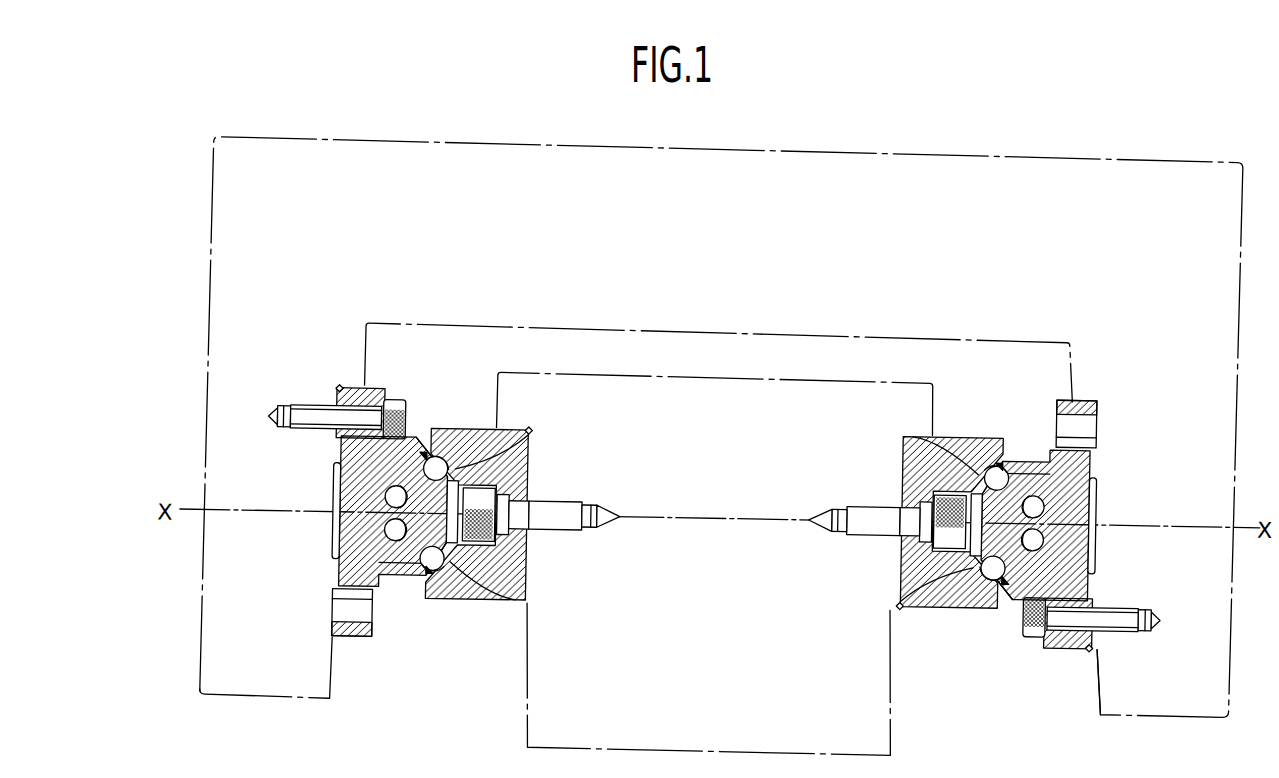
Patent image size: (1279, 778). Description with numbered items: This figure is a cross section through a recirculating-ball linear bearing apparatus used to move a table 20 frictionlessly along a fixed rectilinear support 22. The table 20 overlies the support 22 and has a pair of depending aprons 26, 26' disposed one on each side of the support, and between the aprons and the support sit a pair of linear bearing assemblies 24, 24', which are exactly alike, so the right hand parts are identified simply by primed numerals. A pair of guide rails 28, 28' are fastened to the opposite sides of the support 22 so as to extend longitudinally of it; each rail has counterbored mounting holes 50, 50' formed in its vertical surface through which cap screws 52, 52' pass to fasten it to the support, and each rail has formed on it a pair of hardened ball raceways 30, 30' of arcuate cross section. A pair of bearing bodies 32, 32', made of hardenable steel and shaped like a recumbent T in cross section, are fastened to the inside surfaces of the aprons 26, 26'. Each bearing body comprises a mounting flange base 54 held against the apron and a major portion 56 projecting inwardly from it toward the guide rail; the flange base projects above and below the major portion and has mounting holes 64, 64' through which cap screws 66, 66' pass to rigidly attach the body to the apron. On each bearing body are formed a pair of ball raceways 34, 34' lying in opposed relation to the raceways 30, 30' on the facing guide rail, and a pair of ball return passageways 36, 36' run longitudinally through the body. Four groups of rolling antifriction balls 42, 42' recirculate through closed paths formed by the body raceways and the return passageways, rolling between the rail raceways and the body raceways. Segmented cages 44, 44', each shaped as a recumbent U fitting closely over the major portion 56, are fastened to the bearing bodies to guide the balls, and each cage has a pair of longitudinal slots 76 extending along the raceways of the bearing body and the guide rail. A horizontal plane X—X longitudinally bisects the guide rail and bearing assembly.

The table 20 is at (789, 148).
The rectilinear support 22 is at (714, 750).
The linear bearing assembly 24 is at (447, 502).
The linear bearing assembly 24' is at (981, 515).
The depending aprons 26 is at (605, 516).
The depending apron 26' is at (1187, 674).
The guide rail 28 is at (508, 516).
The guide rail 28' is at (910, 523).
The ball raceway 30 is at (448, 517).
The ball raceway 30' is at (977, 521).
The bearing body 32 is at (350, 510).
The bearing body 32' is at (1079, 525).
The ball raceway 34 is at (369, 521).
The ball raceway 34' is at (1066, 518).
The ball return passageway 36 is at (351, 521).
The ball return passageway 36' is at (1086, 519).
The antifriction balls 42 is at (441, 521).
The antifriction balls 42' is at (1000, 544).
The cage 44 is at (403, 529).
The cage 44' is at (1024, 575).
The mounting holes 50 is at (541, 535).
The mounting holes 50' is at (876, 537).
The cap screws 52 is at (568, 515).
The cap screws 52' is at (857, 519).
The mounting flange base 54 is at (344, 642).
The major portion 56 is at (497, 486).
The mounting holes 64 is at (327, 536).
The mounting holes 64' is at (1053, 526).
The cap screws 66 is at (325, 393).
The cap screws 66' is at (1103, 641).
The slots 76 is at (423, 457).